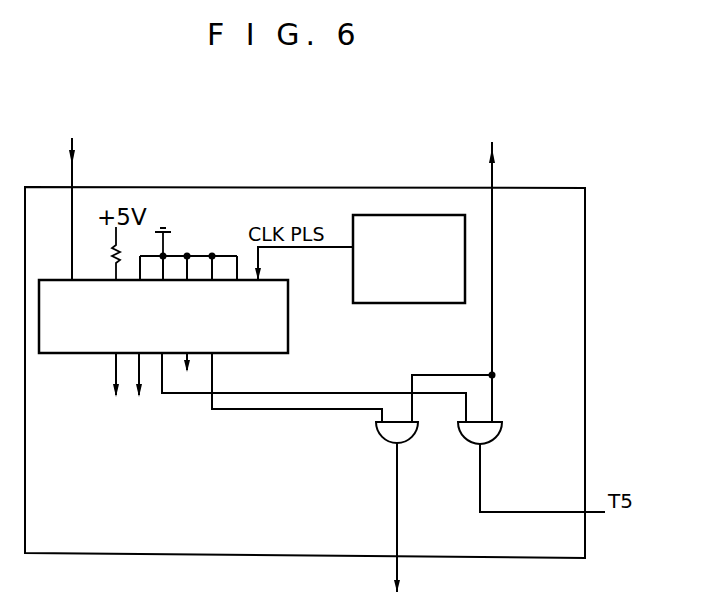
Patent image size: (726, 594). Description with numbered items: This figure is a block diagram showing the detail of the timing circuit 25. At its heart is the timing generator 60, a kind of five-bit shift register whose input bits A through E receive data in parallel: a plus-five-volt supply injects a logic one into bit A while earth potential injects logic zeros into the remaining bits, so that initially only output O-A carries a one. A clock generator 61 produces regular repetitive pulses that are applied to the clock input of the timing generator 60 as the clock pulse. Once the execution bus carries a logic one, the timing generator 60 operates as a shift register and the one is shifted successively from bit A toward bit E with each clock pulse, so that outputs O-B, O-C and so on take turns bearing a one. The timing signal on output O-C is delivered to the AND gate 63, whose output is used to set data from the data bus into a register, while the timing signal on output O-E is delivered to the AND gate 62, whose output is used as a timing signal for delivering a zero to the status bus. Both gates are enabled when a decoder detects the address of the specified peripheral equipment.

The timing circuit 25 is at (333, 187).
The timing generator 60 is at (289, 312).
The clock generator 61 is at (412, 303).
The AND gate 62 is at (414, 438).
The AND gate 63 is at (497, 438).